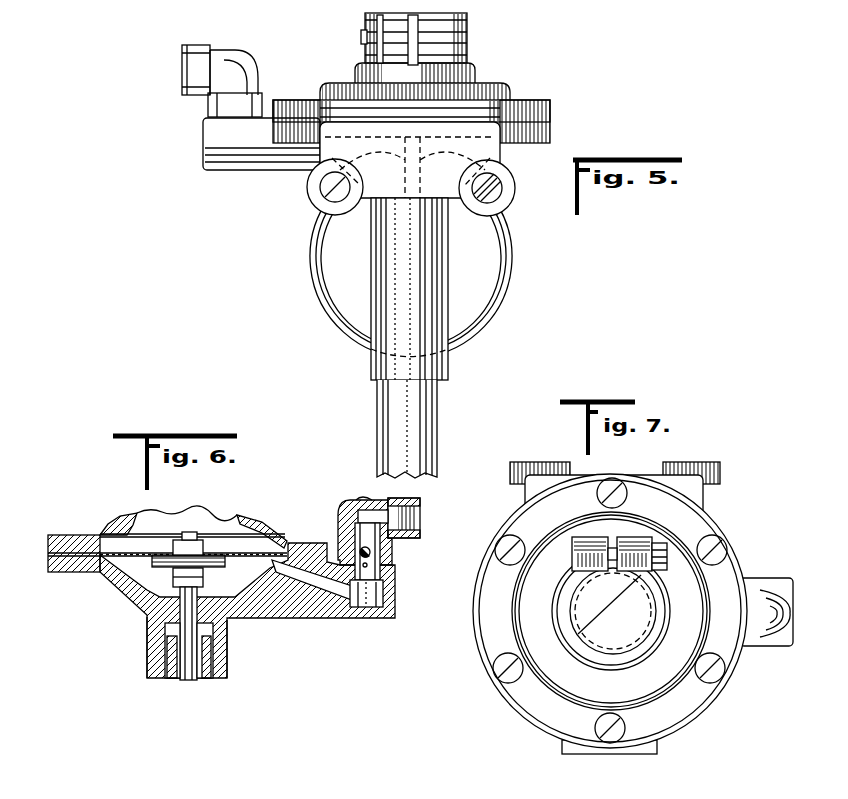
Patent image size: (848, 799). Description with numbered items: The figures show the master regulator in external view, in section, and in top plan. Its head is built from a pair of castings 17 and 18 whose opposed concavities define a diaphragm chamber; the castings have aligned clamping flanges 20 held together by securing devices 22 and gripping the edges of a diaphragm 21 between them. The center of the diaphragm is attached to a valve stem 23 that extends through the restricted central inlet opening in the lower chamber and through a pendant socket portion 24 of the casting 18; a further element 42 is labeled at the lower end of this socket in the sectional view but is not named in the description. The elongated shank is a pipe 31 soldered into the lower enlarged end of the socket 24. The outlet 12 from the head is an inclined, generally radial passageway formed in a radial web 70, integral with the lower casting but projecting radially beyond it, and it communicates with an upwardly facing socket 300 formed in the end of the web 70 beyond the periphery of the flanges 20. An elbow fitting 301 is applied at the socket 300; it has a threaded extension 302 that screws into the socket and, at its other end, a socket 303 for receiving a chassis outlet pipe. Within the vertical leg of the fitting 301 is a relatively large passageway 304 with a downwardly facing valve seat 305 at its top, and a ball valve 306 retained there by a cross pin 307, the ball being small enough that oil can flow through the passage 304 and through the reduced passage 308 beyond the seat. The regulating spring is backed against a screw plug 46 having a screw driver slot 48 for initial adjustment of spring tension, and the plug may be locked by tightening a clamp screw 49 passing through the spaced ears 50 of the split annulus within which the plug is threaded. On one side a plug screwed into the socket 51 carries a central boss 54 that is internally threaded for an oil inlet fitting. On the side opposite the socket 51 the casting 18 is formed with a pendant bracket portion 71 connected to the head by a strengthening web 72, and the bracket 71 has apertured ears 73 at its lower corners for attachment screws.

In FIG. 6, the outlet passageway 12 is at (322, 585).
In FIG. 5, the casting 17 is at (500, 88).
In FIG. 6, the casting 17 is at (107, 523).
In FIG. 7, the casting 17 is at (690, 623).
In FIG. 5, the casting 18 is at (535, 143).
In FIG. 6, the casting 18 is at (112, 597).
In FIG. 5, the clamping flanges 20 is at (550, 128).
In FIG. 6, the clamping flanges 20 is at (48, 559).
In FIG. 7, the clamping flanges 20 is at (693, 710).
In FIG. 6, the diaphragm 21 is at (125, 562).
In FIG. 7, the securing devices 22 is at (718, 677).
In FIG. 6, the valve stem 23 is at (187, 682).
In FIG. 5, the pendant socket portion 24 is at (380, 362).
In FIG. 6, the pendant socket portion 24 is at (227, 665).
In FIG. 5, the pipe 31 is at (428, 418).
In FIG. 6, the bore 42 is at (167, 682).
In FIG. 7, the screw plug 46 is at (622, 633).
In FIG. 7, the screw driver slot 48 is at (585, 635).
In FIG. 5, the clamp screw 49 is at (361, 35).
In FIG. 7, the clamp screw 49 is at (665, 548).
In FIG. 5, the spaced ears 50 is at (387, 45).
In FIG. 7, the spaced ears 50 is at (637, 537).
In FIG. 5, the socket 51 is at (493, 265).
In FIG. 7, the central boss 54 is at (650, 752).
In FIG. 5, the radial web 70 is at (292, 163).
In FIG. 6, the radial web 70 is at (280, 610).
In FIG. 5, the pendant bracket portion 71 is at (432, 198).
In FIG. 7, the pendant bracket portion 71 is at (693, 493).
In FIG. 5, the strengthening web 72 is at (410, 167).
In FIG. 5, the apertured ears 73 is at (510, 200).
In FIG. 7, the apertured ears 73 is at (512, 480).
In FIG. 6, the upwardly facing socket 300 is at (363, 605).
In FIG. 5, the elbow fitting 301 is at (238, 58).
In FIG. 6, the elbow fitting 301 is at (350, 505).
In FIG. 7, the elbow fitting 301 is at (785, 580).
In FIG. 6, the threaded extension 302 is at (390, 570).
In FIG. 6, the socket 303 is at (417, 523).
In FIG. 6, the passageway 304 is at (387, 555).
In FIG. 6, the valve seat 305 is at (360, 532).
In FIG. 6, the ball valve 306 is at (383, 570).
In FIG. 6, the cross pin 307 is at (395, 602).
In FIG. 6, the reduced passage 308 is at (368, 508).